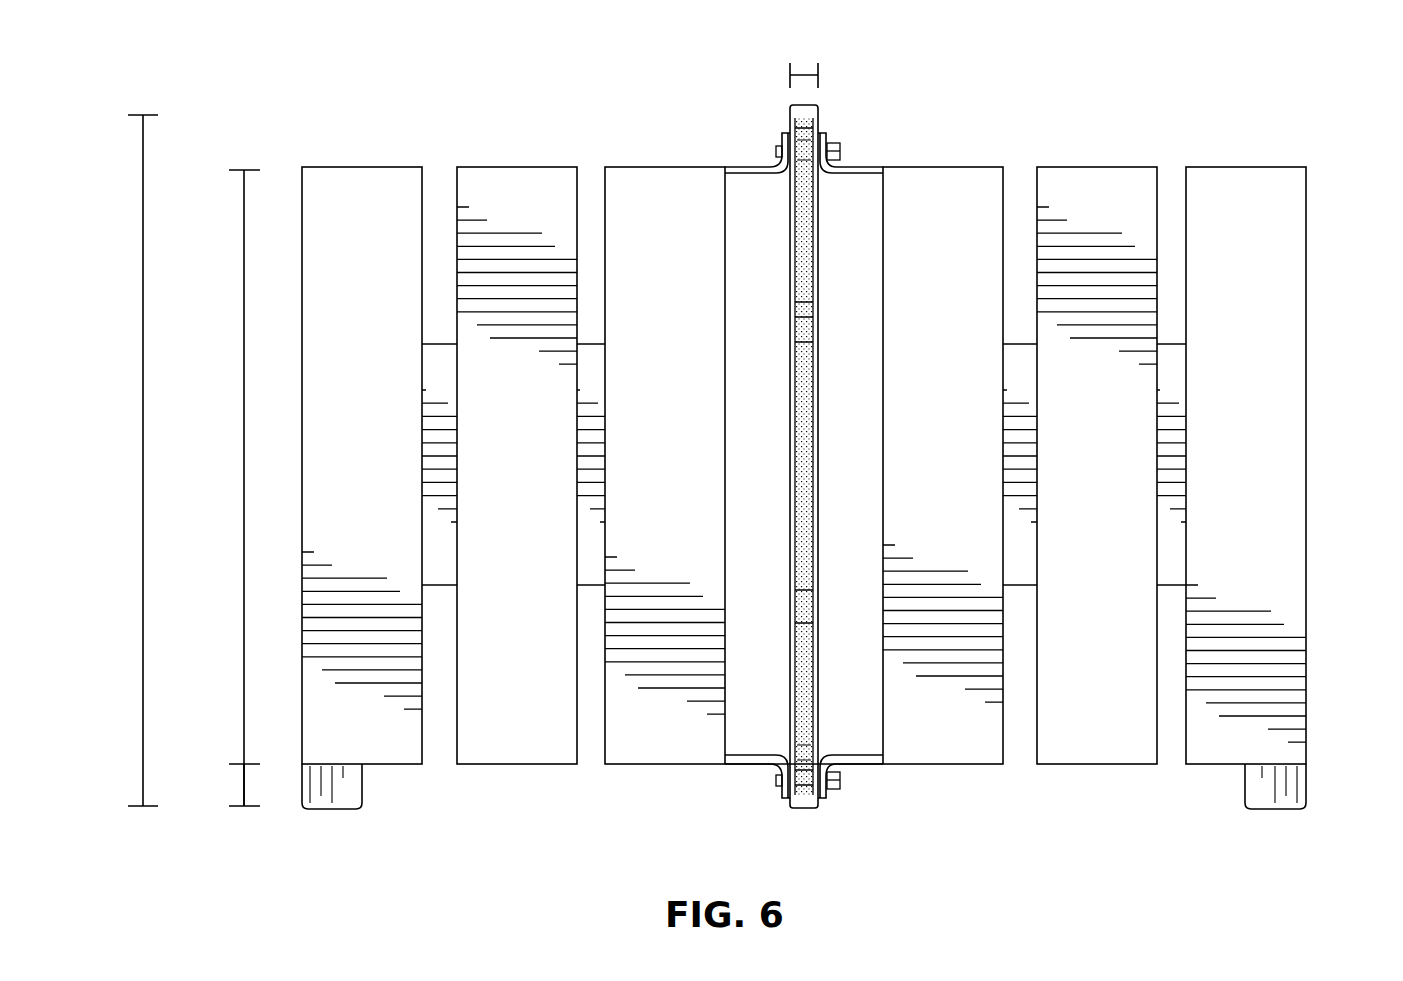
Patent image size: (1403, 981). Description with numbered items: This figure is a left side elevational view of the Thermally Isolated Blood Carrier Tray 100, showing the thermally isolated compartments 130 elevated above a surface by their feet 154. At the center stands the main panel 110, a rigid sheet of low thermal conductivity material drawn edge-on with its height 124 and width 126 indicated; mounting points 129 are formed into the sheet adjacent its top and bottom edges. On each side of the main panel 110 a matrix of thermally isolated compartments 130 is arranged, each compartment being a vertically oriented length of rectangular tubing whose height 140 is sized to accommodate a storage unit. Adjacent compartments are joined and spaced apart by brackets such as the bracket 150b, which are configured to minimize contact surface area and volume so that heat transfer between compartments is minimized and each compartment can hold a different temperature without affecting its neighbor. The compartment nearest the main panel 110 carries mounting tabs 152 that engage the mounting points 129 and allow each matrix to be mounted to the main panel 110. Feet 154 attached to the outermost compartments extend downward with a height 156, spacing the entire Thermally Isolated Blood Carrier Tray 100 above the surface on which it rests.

The Thermally Isolated Blood Carrier Tray 100 is at (410, 88).
The main panel 110 is at (807, 130).
The height 124 is at (143, 443).
The width 126 is at (800, 75).
The mounting points 129 is at (793, 128).
The thermally isolated compartment 130 is at (960, 180).
The height 140 is at (244, 492).
The bracket 150b is at (1173, 368).
The mounting tabs 152 is at (865, 163).
The feet 154 is at (332, 810).
The height 156 is at (244, 778).